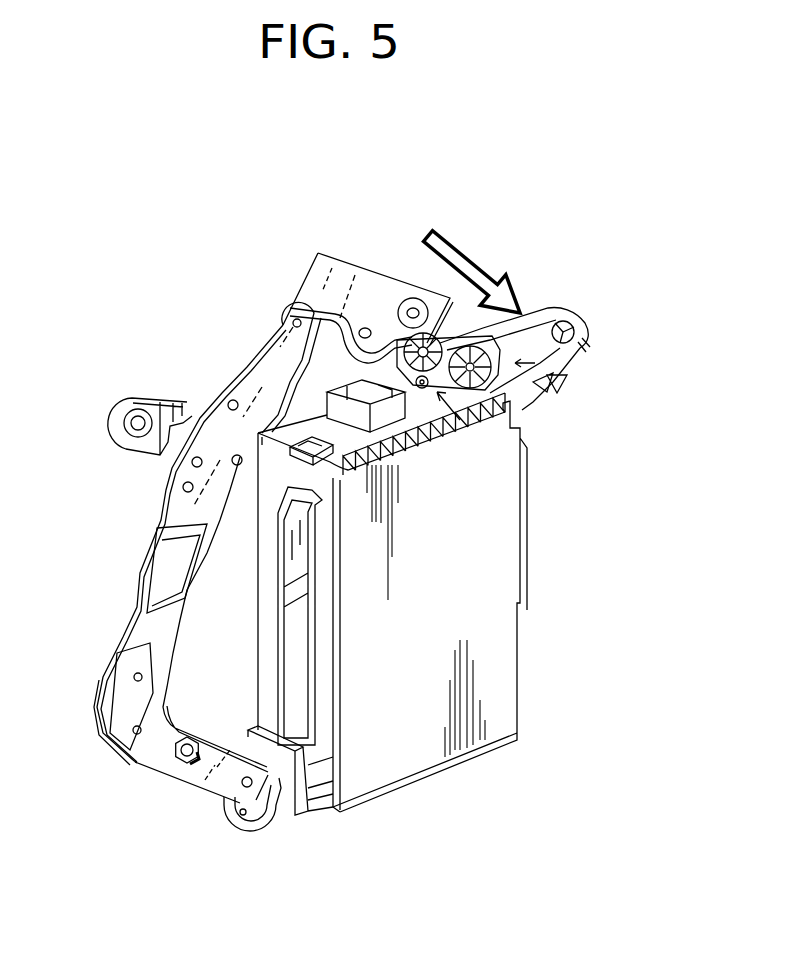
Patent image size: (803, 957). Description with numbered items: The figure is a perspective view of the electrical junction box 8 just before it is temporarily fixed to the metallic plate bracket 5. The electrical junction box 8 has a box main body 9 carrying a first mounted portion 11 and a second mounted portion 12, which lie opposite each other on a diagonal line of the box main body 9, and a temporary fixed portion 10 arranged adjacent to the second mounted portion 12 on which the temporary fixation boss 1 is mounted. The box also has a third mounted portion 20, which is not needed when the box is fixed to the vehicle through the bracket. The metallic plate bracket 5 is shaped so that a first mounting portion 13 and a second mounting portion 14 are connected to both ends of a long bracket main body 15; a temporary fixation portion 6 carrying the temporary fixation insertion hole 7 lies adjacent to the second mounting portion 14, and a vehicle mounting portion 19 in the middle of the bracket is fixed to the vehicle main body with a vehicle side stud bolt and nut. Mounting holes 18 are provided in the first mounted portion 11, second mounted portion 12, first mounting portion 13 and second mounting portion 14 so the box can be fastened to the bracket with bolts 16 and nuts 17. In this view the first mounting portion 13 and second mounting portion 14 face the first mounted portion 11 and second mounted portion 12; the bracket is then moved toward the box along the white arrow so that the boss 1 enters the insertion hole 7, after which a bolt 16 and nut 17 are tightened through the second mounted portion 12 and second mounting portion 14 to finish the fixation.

The temporary fixation boss 1 is at (423, 534).
The metallic plate bracket 5 is at (372, 543).
The temporary fixation portion 6 is at (351, 329).
The temporary fixation insertion hole 7 is at (362, 329).
The electrical junction box 8 is at (530, 736).
The box main body 9 is at (420, 752).
The temporary fixed portion 10 is at (445, 408).
The first mounted portion 11 is at (264, 842).
The second mounted portion 12 is at (560, 366).
The first mounting portion 13 is at (210, 757).
The second mounting portion 14 is at (393, 297).
The bracket main body 15 is at (255, 377).
The bolt 16 is at (183, 742).
The nut 17 is at (200, 773).
The mounting hole 18 is at (425, 308).
The vehicle mounting portion 19 is at (141, 398).
The third mounted portion 20 is at (590, 320).